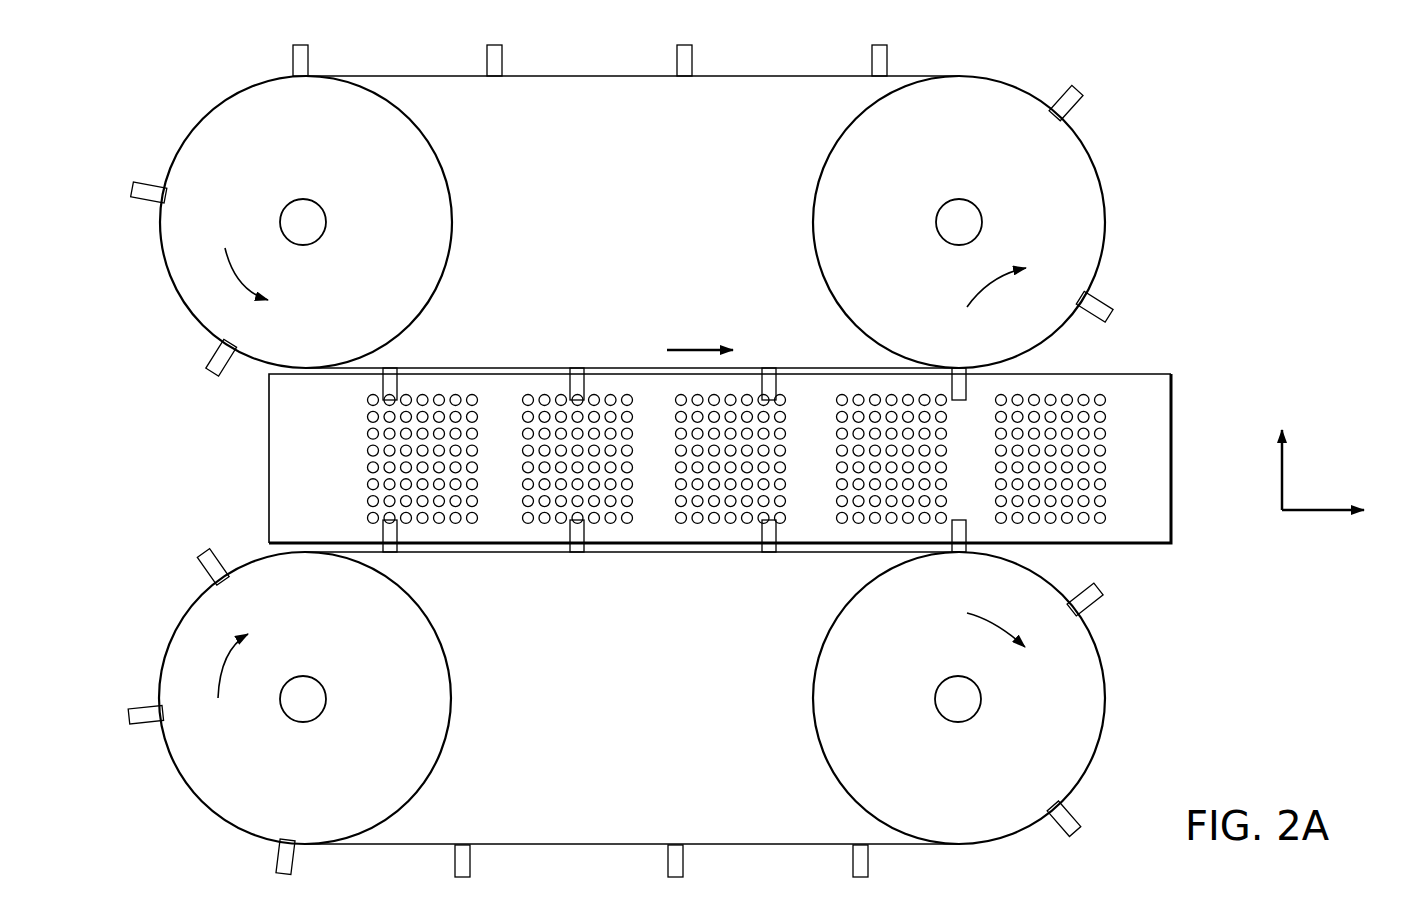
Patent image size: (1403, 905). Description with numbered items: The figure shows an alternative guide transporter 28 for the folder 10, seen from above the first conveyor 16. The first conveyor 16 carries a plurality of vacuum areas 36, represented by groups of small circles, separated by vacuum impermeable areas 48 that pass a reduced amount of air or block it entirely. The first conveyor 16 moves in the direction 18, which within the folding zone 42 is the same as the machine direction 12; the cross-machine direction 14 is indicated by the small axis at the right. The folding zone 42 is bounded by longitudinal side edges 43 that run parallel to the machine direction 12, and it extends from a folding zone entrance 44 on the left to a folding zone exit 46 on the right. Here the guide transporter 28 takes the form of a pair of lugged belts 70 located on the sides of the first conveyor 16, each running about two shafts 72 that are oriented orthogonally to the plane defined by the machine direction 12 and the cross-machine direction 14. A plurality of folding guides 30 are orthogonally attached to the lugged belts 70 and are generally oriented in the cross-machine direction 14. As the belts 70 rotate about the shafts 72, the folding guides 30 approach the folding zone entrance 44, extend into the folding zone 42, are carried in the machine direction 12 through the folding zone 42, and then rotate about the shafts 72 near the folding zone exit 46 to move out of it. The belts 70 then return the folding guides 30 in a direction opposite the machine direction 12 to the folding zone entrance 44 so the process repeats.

The folder 10 is at (1155, 120).
The machine direction 12 is at (1340, 505).
The cross-machine direction 14 is at (1284, 453).
The first conveyor 16 is at (666, 463).
The direction 18 is at (716, 347).
The guide transporter 28 is at (545, 76).
The folding guides 30 is at (308, 57).
The vacuum areas 36 is at (553, 532).
The folding zone 42 is at (684, 588).
The longitudinal side edges 43 is at (427, 373).
The folding zone entrance 44 is at (224, 466).
The folding zone exit 46 is at (1206, 492).
The vacuum impermeable areas 48 is at (334, 463).
The lugged belts 70 is at (770, 76).
The shafts 72 is at (302, 222).